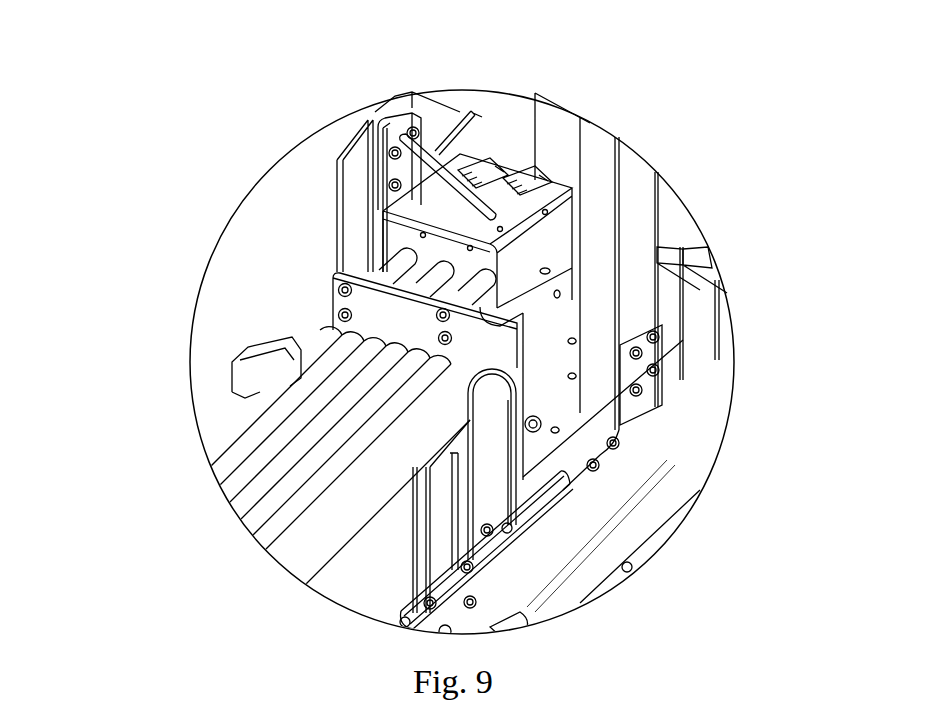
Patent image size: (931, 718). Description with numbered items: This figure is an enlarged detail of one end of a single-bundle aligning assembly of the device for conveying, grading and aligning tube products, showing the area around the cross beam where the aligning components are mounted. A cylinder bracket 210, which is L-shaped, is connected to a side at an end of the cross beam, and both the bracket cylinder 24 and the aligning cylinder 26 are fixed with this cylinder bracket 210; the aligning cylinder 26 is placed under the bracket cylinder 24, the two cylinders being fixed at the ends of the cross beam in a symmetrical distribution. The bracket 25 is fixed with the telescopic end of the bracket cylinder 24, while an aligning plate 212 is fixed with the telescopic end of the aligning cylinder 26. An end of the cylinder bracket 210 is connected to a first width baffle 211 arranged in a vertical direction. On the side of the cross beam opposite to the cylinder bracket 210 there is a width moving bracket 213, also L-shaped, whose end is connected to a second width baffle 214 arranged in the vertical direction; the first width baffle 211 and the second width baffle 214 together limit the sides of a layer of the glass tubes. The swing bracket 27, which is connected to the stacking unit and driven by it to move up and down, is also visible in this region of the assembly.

The bracket cylinder 24 is at (546, 237).
The cylinder bracket 210 is at (336, 158).
The bracket 25 is at (375, 310).
The first width baffle 211 is at (243, 388).
The aligning cylinder 26 is at (568, 292).
The width moving bracket 213 is at (642, 283).
The second width baffle 214 is at (490, 422).
The aligning plate 212 is at (540, 453).
The swing bracket 27 is at (538, 523).